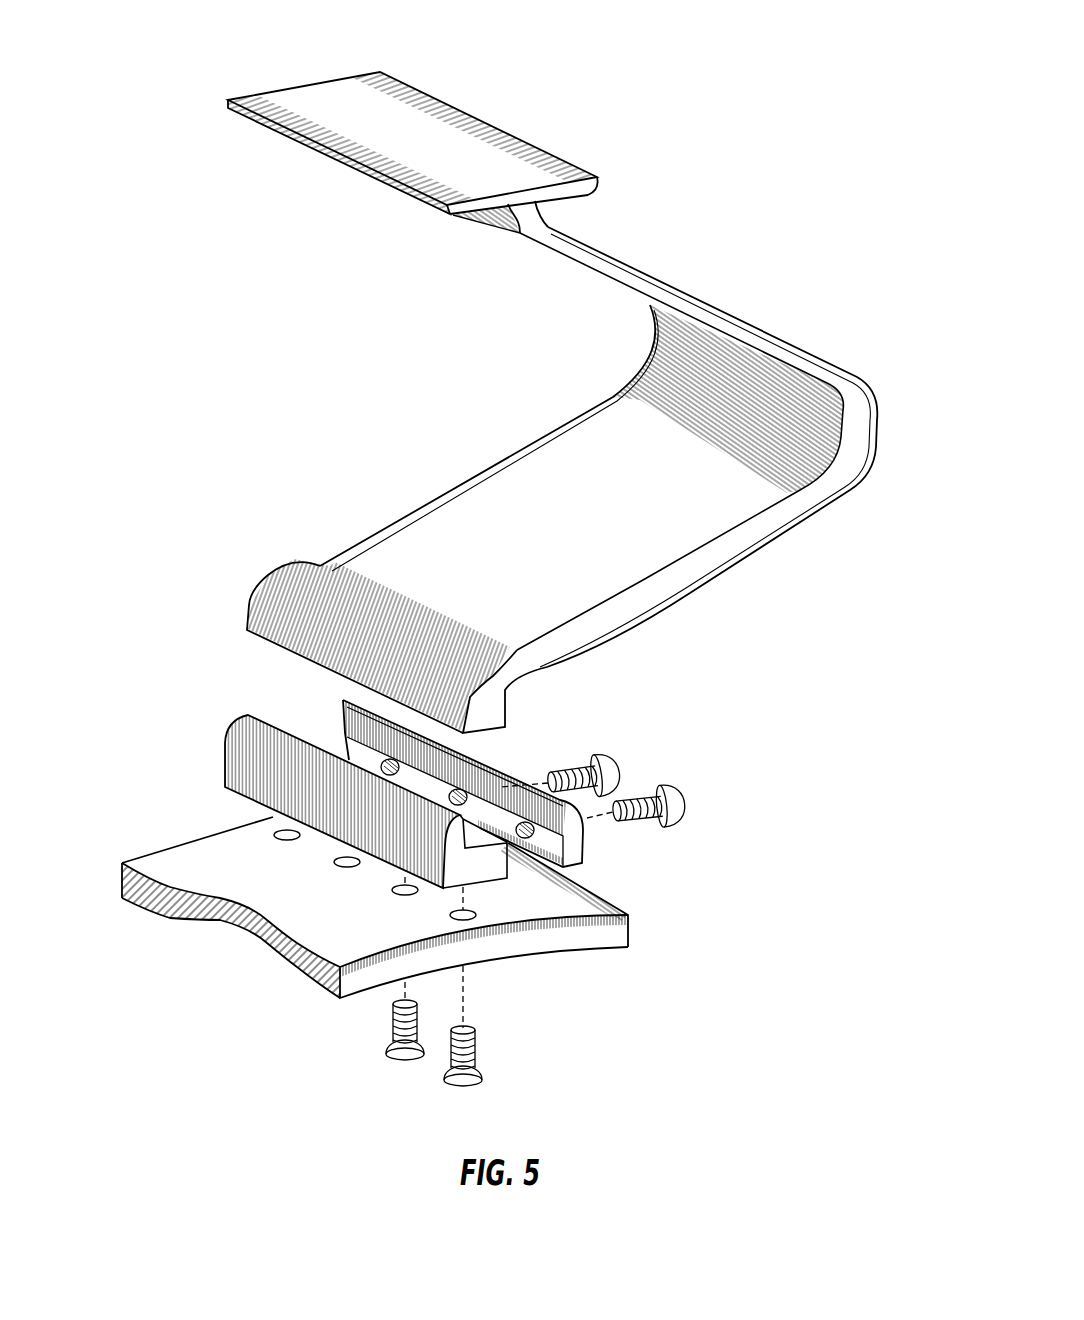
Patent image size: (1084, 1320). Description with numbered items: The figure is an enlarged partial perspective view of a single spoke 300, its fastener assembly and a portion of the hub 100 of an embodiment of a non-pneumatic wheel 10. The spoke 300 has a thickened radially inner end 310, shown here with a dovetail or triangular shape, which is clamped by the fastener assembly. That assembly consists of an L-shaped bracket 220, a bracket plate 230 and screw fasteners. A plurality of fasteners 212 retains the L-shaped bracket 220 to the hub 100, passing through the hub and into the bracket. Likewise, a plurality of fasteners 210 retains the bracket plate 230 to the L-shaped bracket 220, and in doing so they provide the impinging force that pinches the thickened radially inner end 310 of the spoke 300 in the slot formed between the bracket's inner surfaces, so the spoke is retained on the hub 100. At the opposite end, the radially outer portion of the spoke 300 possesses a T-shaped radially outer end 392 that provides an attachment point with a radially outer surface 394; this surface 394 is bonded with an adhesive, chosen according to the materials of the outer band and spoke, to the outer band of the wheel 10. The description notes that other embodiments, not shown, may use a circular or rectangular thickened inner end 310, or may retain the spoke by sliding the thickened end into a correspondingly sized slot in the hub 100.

The non-pneumatic wheel 10 is at (786, 96).
The hub 100 is at (552, 937).
The fasteners 210 is at (622, 772).
The fasteners 212 is at (462, 1088).
The L-shaped bracket 220 is at (240, 767).
The bracket plate 230 is at (510, 793).
The spoke 300 is at (733, 513).
The thickened radially inner end 310 is at (283, 637).
The T-shaped radially outer end 392 is at (575, 190).
The radially outer surface 394 is at (443, 123).